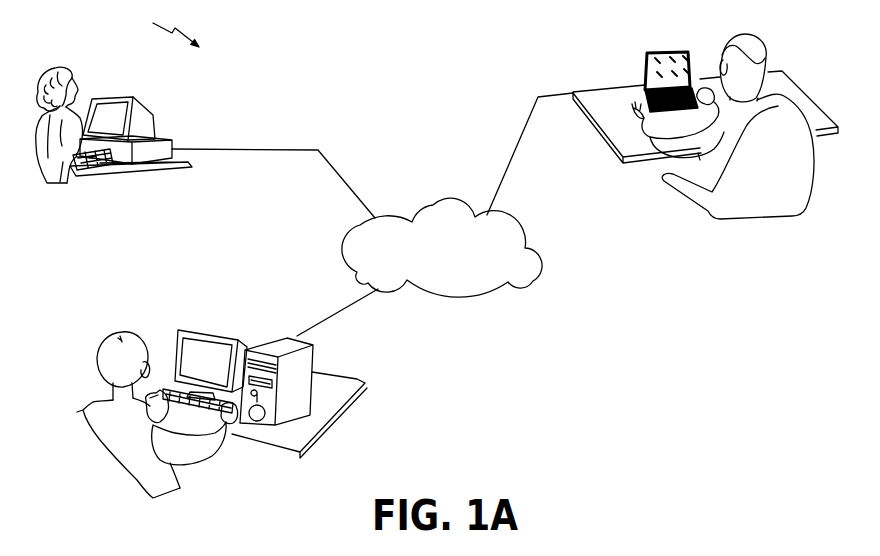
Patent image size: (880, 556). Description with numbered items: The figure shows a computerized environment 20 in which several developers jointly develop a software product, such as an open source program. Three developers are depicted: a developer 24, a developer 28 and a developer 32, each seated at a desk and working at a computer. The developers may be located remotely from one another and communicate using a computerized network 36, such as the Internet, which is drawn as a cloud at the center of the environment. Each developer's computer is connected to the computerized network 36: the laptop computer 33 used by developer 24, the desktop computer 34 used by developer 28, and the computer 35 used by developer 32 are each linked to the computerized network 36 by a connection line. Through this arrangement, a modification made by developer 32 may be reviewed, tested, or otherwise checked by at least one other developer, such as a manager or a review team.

The computerized environment 20 is at (167, 31).
The developer 28 is at (72, 70).
The developer's computer 34 is at (163, 140).
The computerized network 36 is at (434, 203).
The developer's computer 33 is at (646, 92).
The developer 24 is at (803, 93).
The developer 32 is at (138, 333).
The developer's computer 35 is at (272, 345).